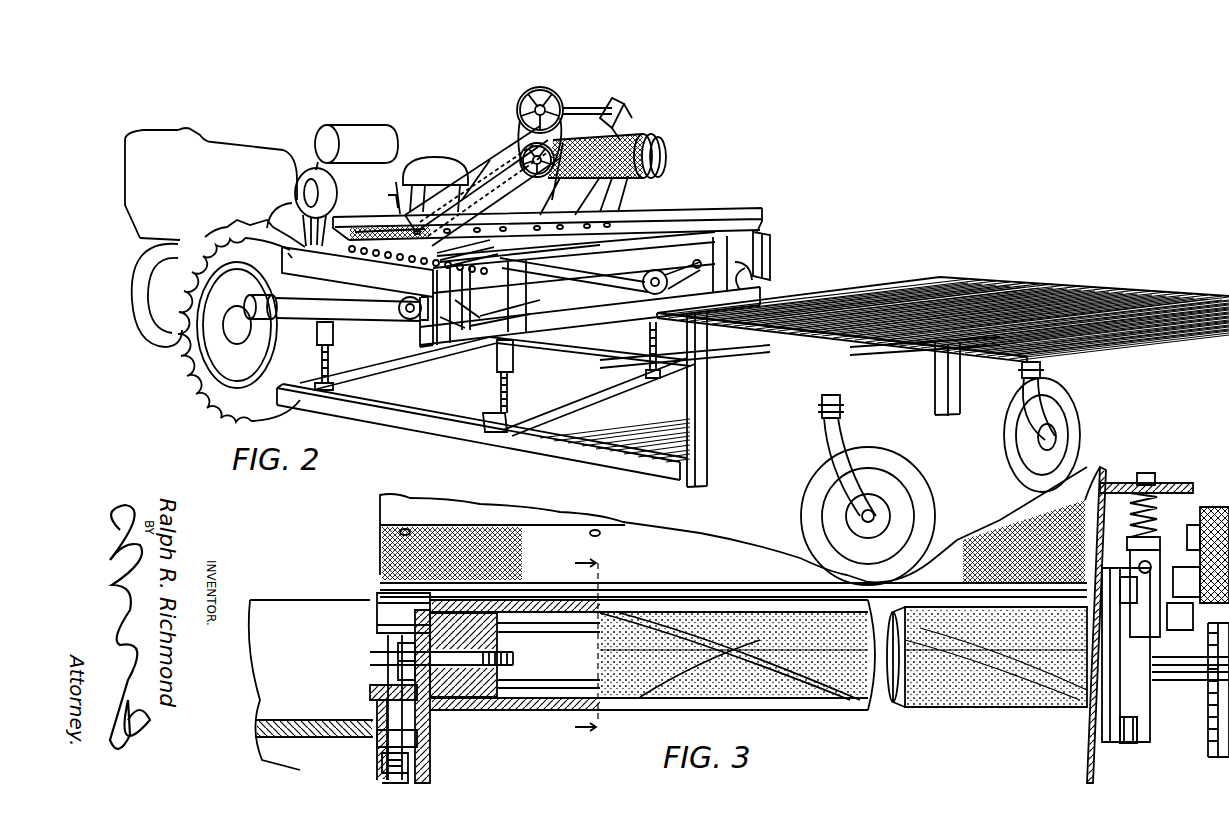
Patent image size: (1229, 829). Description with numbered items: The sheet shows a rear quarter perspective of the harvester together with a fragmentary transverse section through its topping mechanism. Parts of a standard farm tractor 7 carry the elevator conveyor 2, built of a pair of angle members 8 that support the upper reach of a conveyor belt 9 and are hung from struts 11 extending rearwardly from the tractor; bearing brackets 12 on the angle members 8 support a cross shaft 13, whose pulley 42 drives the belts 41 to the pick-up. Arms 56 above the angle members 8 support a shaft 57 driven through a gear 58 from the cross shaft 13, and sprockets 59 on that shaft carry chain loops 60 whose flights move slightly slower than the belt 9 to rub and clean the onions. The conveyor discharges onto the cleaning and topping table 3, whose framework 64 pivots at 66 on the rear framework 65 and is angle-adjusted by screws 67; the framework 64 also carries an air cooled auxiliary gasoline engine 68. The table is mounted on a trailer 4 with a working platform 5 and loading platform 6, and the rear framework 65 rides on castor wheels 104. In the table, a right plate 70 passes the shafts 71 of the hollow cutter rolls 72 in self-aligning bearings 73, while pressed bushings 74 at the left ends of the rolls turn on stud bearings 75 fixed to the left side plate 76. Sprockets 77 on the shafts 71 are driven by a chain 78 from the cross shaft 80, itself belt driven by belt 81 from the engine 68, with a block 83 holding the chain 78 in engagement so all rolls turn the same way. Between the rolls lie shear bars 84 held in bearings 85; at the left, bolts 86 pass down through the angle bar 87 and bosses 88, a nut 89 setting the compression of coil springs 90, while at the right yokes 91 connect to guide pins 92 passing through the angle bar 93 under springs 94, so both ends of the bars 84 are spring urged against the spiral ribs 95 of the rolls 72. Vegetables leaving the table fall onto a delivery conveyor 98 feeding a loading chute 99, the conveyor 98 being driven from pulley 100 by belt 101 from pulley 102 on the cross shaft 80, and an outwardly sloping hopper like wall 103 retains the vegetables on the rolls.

In FIG. 2, the conveyor 2 is at (476, 157).
In FIG. 2, the cleaning and topping table 3 is at (672, 210).
In FIG. 3, the cleaning and topping table 3 is at (380, 520).
In FIG. 2, the trailer 4 is at (955, 370).
In FIG. 2, the working platform 5 is at (738, 420).
In FIG. 3, the working platform 5 is at (578, 646).
In FIG. 2, the loading or storage platform 6 is at (958, 282).
In FIG. 2, the tractor 7 is at (220, 137).
In FIG. 2, the angle members 8 is at (435, 168).
In FIG. 2, the conveyor belt 9 is at (600, 150).
In FIG. 2, the struts 11 is at (620, 198).
In FIG. 2, the bearing brackets 12 is at (630, 153).
In FIG. 2, the cross shaft 13 is at (520, 150).
In FIG. 2, the belts 41 is at (660, 152).
In FIG. 2, the pulley 42 is at (666, 164).
In FIG. 2, the arms 56 is at (615, 105).
In FIG. 2, the shaft 57 is at (586, 110).
In FIG. 2, the gear 58 is at (543, 86).
In FIG. 2, the sprockets 59 is at (628, 118).
In FIG. 2, the chain loops 60 is at (480, 150).
In FIG. 2, the framework 64 is at (765, 242).
In FIG. 2, the framework 65 is at (420, 425).
In FIG. 2, the pivot 66 is at (560, 342).
In FIG. 2, the screws 67 is at (512, 392).
In FIG. 2, the auxiliary gasoline engine 68 is at (340, 125).
In FIG. 3, the plate 70 is at (1088, 757).
In FIG. 3, the shafts 71 is at (1170, 682).
In FIG. 2, the cutter rolls 72 is at (470, 255).
In FIG. 3, the cutter rolls 72 is at (918, 710).
In FIG. 3, the self-aligning bearings 73 is at (1138, 715).
In FIG. 3, the pressed bushings 74 is at (490, 698).
In FIG. 3, the stud bearings 75 is at (470, 698).
In FIG. 3, the left side plate 76 is at (428, 748).
In FIG. 3, the sprockets 77 is at (1208, 695).
In FIG. 2, the chain 78 is at (755, 283).
In FIG. 3, the chain 78 is at (1212, 755).
In FIG. 2, the cross shaft 80 is at (295, 310).
In FIG. 2, the belt 81 is at (400, 187).
In FIG. 3, the block 83 is at (1200, 515).
In FIG. 3, the shear bars 84 is at (628, 600).
In FIG. 2, the bearings 85 is at (380, 262).
In FIG. 3, the bearings 85 is at (375, 620).
In FIG. 3, the bolts 86 is at (388, 672).
In FIG. 2, the angle bar 87 is at (510, 280).
In FIG. 3, the angle bar 87 is at (370, 740).
In FIG. 3, the bosses 88 is at (412, 738).
In FIG. 3, the nut 89 is at (410, 780).
In FIG. 3, the coil springs 90 is at (388, 763).
In FIG. 3, the yokes 91 is at (1147, 600).
In FIG. 3, the guide pins 92 is at (1148, 470).
In FIG. 3, the angle bar 93 is at (1125, 470).
In FIG. 3, the springs 94 is at (1172, 482).
In FIG. 3, the spiral ribs 95 is at (830, 712).
In FIG. 2, the delivery conveyor 98 is at (440, 290).
In FIG. 3, the delivery conveyor 98 is at (285, 718).
In FIG. 2, the loading chute 99 is at (465, 312).
In FIG. 2, the pulley 100 is at (412, 320).
In FIG. 2, the belt 101 is at (366, 322).
In FIG. 2, the pulley 102 is at (237, 325).
In FIG. 2, the hopper like wall 103 is at (690, 215).
In FIG. 3, the hopper like wall 103 is at (380, 552).
In FIG. 2, the castor wheels 104 is at (1003, 442).